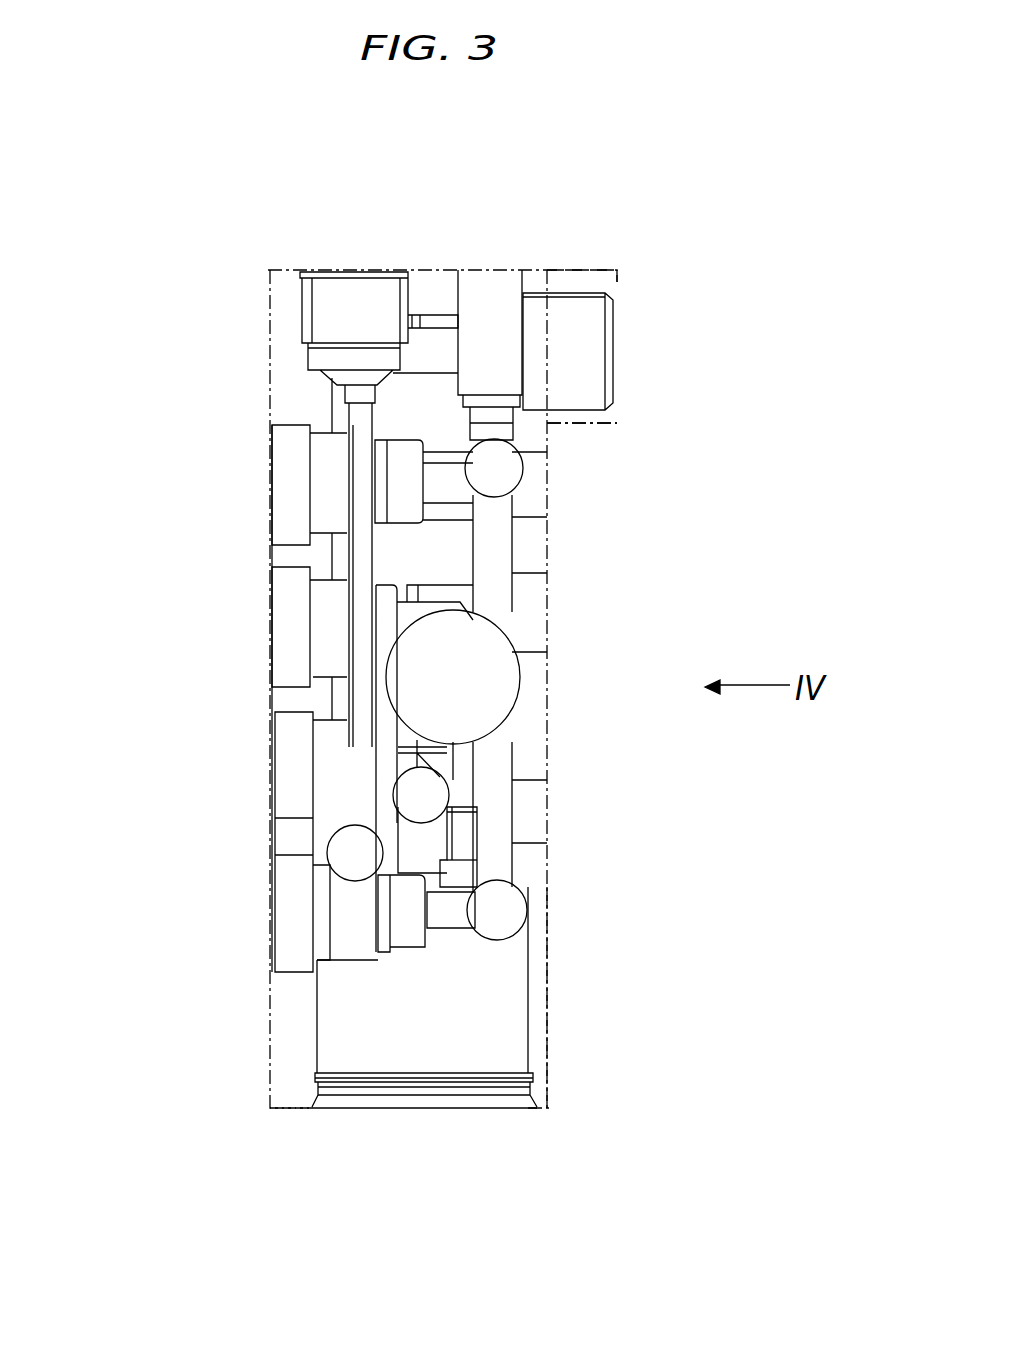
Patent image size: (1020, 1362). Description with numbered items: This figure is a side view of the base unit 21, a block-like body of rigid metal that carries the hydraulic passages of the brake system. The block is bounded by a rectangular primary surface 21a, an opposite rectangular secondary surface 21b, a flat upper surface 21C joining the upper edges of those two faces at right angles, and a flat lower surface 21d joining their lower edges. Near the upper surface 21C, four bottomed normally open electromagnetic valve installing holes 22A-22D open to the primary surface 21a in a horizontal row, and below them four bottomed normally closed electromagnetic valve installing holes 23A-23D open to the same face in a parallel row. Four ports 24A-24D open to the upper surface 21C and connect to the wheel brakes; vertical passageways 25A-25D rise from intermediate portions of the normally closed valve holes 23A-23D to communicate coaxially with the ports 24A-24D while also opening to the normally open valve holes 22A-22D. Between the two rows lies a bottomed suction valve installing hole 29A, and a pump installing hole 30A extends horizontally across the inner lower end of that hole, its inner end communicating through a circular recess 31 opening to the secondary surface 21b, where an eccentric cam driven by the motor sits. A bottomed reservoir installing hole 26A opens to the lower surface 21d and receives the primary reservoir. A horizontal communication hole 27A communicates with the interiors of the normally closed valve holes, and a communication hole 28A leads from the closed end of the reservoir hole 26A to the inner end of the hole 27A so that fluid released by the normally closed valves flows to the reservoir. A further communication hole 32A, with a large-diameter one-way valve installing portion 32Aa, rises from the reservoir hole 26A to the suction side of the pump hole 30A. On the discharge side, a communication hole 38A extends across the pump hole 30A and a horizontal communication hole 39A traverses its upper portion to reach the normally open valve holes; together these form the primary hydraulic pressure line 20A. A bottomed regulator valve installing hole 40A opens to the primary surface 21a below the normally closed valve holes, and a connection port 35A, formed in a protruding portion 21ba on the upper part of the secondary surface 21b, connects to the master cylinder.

The base unit 21 is at (557, 1072).
The upper surface 21C is at (533, 270).
The protruding portion 21ba is at (557, 270).
The connection port 35A is at (578, 395).
The ports 24A-24D is at (333, 272).
The passageways 25A-25D is at (355, 632).
The normally open electromagnetic valve installing holes 22A-22D is at (290, 462).
The suction valve installing hole 29A is at (290, 582).
The primary surface 21a is at (272, 697).
The normally closed electromagnetic valve installing holes 23A-23D is at (283, 777).
The communication hole 39A is at (505, 468).
The communication hole 38A is at (490, 603).
The recess 31 is at (530, 783).
The pump installing hole 30A is at (507, 657).
The communication hole 32A is at (465, 755).
The one-way valve installing portion 32Aa is at (468, 840).
The communication hole 27A is at (415, 795).
The communication hole 28A is at (417, 853).
The primary hydraulic pressure line 20A is at (532, 893).
The regulator valve installing hole 40A is at (350, 963).
The reservoir installing hole 26A is at (530, 963).
The secondary surface 21b is at (553, 927).
The lower surface 21d is at (290, 1108).